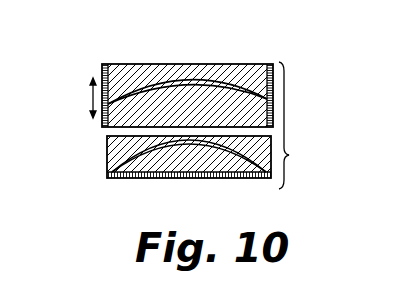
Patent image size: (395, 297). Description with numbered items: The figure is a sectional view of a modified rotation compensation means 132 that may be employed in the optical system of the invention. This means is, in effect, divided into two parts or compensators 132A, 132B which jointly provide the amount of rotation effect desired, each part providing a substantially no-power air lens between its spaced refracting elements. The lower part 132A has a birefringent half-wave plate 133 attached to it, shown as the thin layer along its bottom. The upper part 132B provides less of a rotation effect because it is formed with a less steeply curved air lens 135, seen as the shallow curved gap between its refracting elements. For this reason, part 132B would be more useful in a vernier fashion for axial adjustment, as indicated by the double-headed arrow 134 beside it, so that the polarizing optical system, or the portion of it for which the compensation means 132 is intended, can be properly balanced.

The rotation compensation means 132 is at (301, 125).
The compensator 132A is at (105, 152).
The compensator 132B is at (194, 62).
The birefringent half-wave plate 133 is at (225, 179).
The arrow 134 is at (92, 98).
The air lens 135 is at (264, 98).